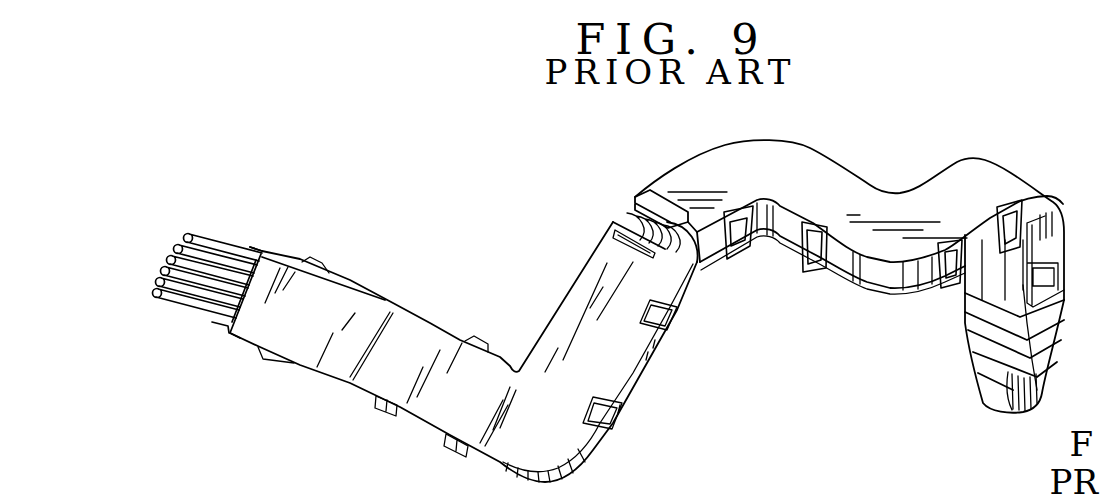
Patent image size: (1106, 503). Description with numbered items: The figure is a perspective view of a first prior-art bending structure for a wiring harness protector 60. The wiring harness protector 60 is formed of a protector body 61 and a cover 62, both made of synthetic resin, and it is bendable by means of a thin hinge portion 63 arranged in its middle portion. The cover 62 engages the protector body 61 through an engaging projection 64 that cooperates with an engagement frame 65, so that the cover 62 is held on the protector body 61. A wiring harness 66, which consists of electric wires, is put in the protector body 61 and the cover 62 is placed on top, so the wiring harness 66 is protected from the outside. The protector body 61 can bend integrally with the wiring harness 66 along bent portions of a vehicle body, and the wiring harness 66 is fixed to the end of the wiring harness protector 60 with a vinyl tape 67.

The wiring harness protector 60 is at (526, 182).
The protector body 61 is at (855, 286).
The cover 62 is at (608, 264).
The thin hinge portion 63 is at (697, 266).
The engaging projection 64 is at (740, 222).
The engagement frame 65 is at (745, 240).
The wiring harness 66 is at (220, 242).
The vinyl tape 67 is at (982, 343).